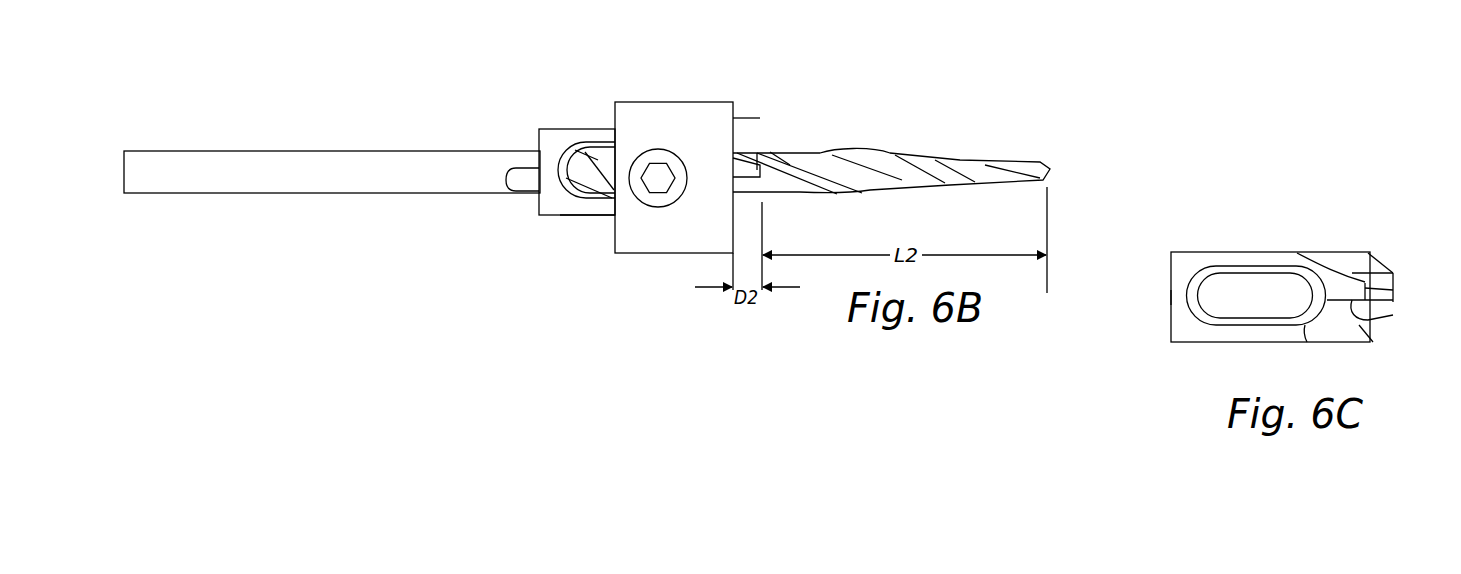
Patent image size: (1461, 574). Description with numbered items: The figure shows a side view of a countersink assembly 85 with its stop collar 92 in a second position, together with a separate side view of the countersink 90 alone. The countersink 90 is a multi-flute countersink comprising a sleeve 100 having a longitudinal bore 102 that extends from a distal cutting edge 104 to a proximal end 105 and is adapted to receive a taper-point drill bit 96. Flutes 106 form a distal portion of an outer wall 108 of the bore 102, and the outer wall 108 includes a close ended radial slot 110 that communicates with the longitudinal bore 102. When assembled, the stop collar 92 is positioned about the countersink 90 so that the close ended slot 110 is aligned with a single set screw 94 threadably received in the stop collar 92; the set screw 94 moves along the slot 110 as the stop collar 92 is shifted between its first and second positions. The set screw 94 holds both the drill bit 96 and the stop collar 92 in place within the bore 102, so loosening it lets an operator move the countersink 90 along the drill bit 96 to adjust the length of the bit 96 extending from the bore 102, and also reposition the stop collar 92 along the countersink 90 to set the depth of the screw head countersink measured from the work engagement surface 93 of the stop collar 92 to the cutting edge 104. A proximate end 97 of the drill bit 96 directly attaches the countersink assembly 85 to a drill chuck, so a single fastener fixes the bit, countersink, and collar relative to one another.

In FIG. 6B, the countersink assembly 85 is at (732, 83).
In FIG. 6B, the countersink 90 is at (559, 134).
In FIG. 6C, the countersink 90 is at (1182, 264).
In FIG. 6B, the stop collar 92 is at (679, 120).
In FIG. 6B, the work engagement surface 93 is at (733, 118).
In FIG. 6B, the set screw 94 is at (655, 163).
In FIG. 6B, the drill bit 96 is at (888, 152).
In FIG. 6B, the proximate end 97 is at (143, 168).
In FIG. 6B, the sleeve 100 is at (598, 133).
In FIG. 6C, the sleeve 100 is at (1246, 254).
In FIG. 6B, the longitudinal bore 102 is at (760, 196).
In FIG. 6C, the longitudinal bore 102 is at (1387, 313).
In FIG. 6B, the distal cutting edge 104 is at (757, 153).
In FIG. 6C, the distal cutting edge 104 is at (1372, 268).
In FIG. 6B, the proximal end 105 is at (537, 205).
In FIG. 6C, the proximal end 105 is at (1171, 297).
In FIG. 6B, the flutes 106 is at (770, 152).
In FIG. 6C, the flutes 106 is at (1390, 290).
In FIG. 6B, the outer wall 108 is at (600, 213).
In FIG. 6C, the outer wall 108 is at (1295, 258).
In FIG. 6B, the close ended radial slot 110 is at (572, 163).
In FIG. 6C, the close ended radial slot 110 is at (1240, 292).